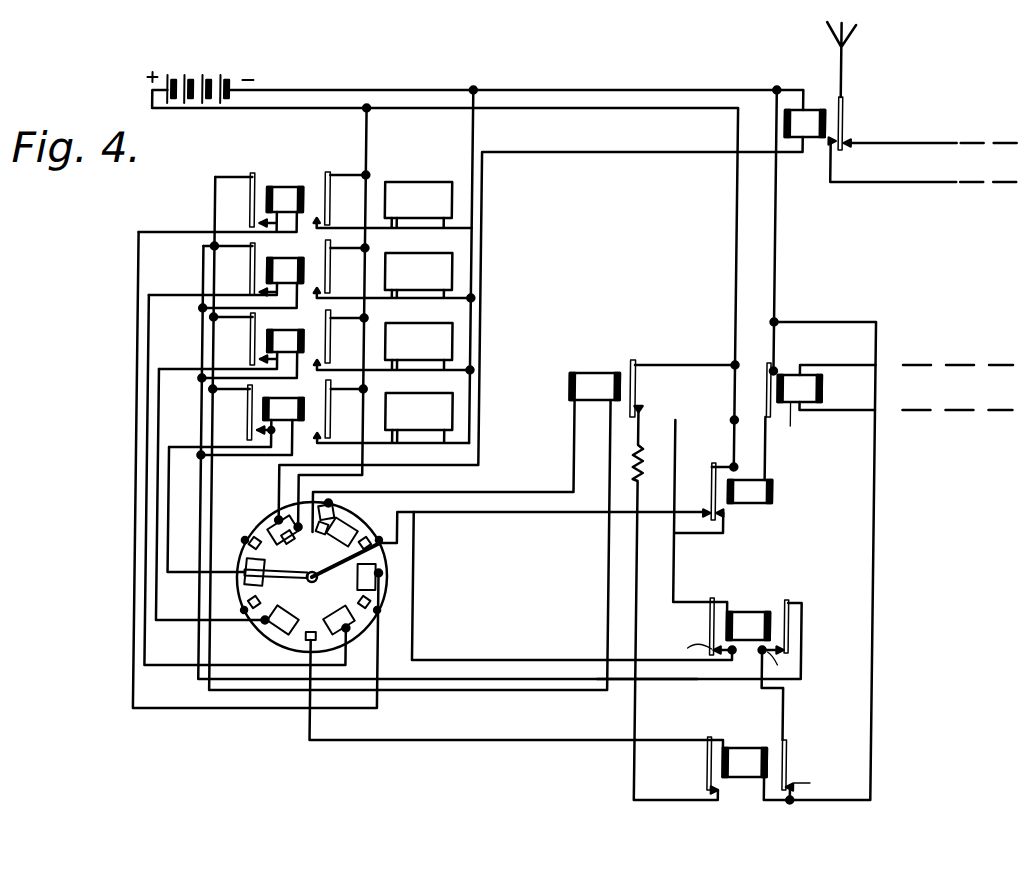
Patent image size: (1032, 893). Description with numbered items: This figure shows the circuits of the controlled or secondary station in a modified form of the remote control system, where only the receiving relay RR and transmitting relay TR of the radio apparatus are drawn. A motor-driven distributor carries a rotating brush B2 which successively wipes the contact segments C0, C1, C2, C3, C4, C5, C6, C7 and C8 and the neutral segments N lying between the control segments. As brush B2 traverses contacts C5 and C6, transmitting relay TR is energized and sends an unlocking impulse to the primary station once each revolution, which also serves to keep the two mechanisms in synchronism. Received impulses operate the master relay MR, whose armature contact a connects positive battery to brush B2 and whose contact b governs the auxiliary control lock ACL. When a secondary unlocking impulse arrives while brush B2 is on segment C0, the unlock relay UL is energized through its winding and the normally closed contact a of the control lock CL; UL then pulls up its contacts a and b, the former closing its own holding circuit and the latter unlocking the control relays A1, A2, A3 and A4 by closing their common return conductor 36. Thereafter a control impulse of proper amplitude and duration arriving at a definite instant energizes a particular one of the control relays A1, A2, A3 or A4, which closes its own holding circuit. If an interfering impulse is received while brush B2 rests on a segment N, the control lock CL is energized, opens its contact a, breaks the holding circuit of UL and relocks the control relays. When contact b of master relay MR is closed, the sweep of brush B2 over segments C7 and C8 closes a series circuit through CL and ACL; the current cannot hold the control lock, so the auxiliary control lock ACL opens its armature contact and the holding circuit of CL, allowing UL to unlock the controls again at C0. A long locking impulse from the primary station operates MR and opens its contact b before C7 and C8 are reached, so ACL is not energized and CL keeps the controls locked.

The control relay A1 is at (264, 199).
The control relay A2 is at (265, 270).
The control relay A3 is at (266, 340).
The control relay A4 is at (263, 410).
The contact segment C0 is at (345, 522).
The contact segment C1 is at (372, 575).
The contact segment C2 is at (346, 622).
The contact segment C3 is at (280, 630).
The contact segment C4 is at (252, 582).
The contact segment C5 is at (276, 522).
The contact segment C6 is at (295, 543).
The contact segment C7 is at (320, 542).
The contact segment C8 is at (330, 502).
The brush B2 is at (312, 576).
The segment N is at (311, 588).
The auxiliary control lock ACL is at (522, 580).
The master relay MR is at (576, 514).
The receiving relay RR is at (889, 403).
The transmitting relay TR is at (901, 102).
The unlock relay UL is at (600, 626).
The control lock CL is at (566, 722).
The common return conductor 36 is at (703, 680).
The armature contact a is at (726, 514).
The armature contact b is at (708, 510).